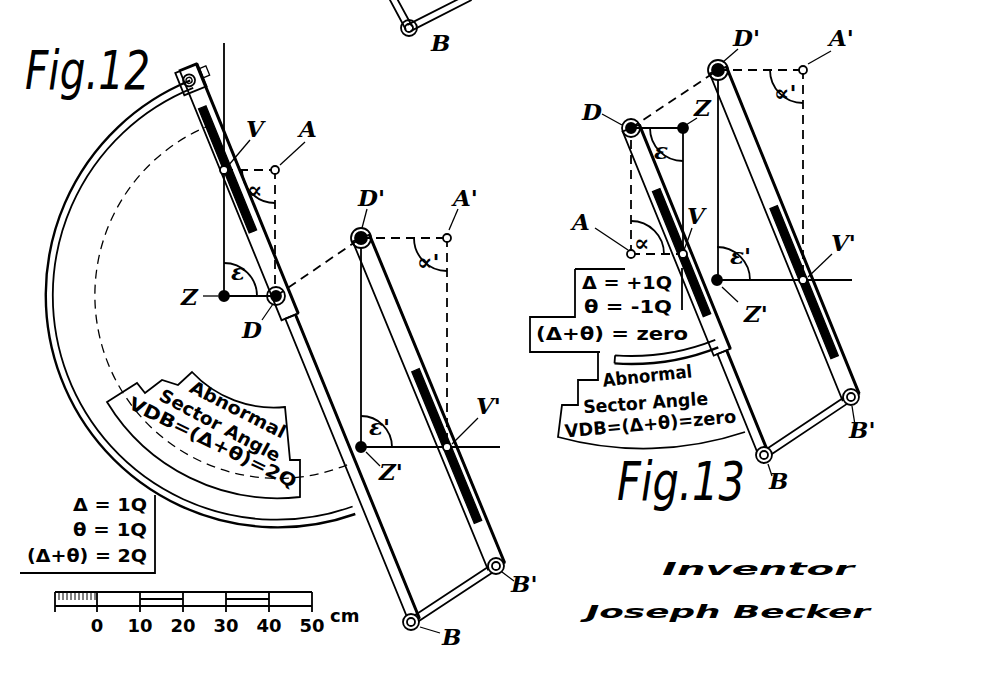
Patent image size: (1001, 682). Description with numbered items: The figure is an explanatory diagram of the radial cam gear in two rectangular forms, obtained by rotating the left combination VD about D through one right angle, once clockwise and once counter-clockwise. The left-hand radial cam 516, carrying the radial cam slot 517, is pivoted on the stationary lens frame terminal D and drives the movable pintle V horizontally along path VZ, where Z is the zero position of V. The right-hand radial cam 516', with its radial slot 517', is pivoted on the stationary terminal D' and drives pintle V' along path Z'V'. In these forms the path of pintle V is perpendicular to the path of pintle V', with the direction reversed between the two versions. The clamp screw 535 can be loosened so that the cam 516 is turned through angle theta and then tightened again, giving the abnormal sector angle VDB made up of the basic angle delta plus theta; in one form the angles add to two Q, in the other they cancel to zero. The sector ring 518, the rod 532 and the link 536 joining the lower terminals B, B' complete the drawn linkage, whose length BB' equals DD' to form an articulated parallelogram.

In FIG. 12, the left-hand radial cam 516 is at (215, 191).
In FIG. 13, the left-hand radial cam 516 is at (665, 292).
In FIG. 12, the radial cam slot 517 is at (203, 169).
In FIG. 13, the radial cam slot 517 is at (636, 248).
In FIG. 12, the sector ring 518 is at (82, 420).
In FIG. 13, the sector ring 518 is at (725, 349).
In FIG. 12, the rod 532 is at (307, 363).
In FIG. 12, the clamp screw 535 is at (186, 72).
In FIG. 12, the link 536 is at (455, 590).
In FIG. 13, the link 536 is at (808, 420).
In FIG. 12, the right-hand radial cam 516' is at (429, 402).
In FIG. 13, the right-hand radial cam 516' is at (784, 234).
In FIG. 12, the radial slot 517' is at (468, 446).
In FIG. 13, the radial slot 517' is at (825, 282).